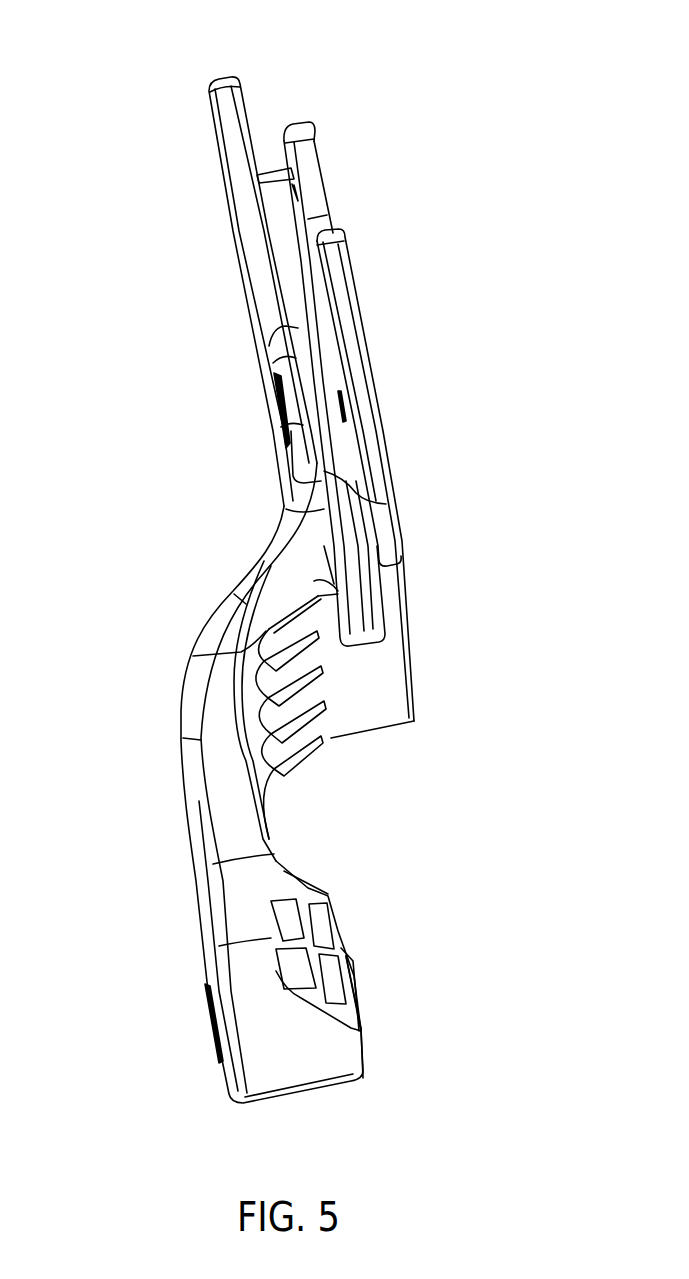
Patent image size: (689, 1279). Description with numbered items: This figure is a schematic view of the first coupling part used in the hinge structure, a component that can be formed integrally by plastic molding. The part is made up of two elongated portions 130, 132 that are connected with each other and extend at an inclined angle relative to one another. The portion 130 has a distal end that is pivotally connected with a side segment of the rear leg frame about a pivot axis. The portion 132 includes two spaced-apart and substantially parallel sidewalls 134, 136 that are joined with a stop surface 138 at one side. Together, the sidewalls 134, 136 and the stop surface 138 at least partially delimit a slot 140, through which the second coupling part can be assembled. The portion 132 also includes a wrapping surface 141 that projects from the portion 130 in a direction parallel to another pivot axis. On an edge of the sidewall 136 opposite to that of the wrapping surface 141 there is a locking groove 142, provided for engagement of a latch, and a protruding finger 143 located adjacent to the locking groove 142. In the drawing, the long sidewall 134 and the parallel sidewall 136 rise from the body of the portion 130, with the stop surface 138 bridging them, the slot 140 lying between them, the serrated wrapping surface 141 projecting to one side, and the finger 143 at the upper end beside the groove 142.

The elongated portion 130 is at (180, 873).
The elongated portion 132 is at (250, 400).
The sidewall 134 is at (238, 192).
The sidewall 136 is at (377, 480).
The stop surface 138 is at (304, 333).
The slot 140 is at (340, 362).
The wrapping surface 141 is at (335, 730).
The locking groove 142 is at (330, 203).
The protruding finger 143 is at (302, 125).